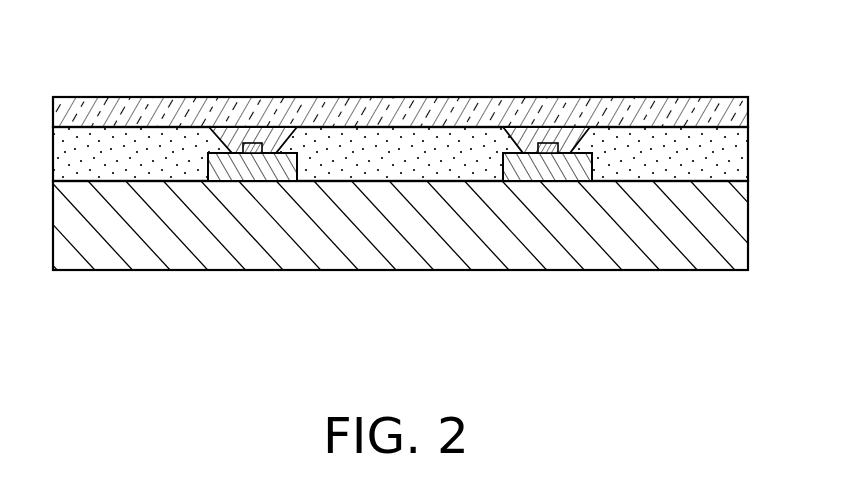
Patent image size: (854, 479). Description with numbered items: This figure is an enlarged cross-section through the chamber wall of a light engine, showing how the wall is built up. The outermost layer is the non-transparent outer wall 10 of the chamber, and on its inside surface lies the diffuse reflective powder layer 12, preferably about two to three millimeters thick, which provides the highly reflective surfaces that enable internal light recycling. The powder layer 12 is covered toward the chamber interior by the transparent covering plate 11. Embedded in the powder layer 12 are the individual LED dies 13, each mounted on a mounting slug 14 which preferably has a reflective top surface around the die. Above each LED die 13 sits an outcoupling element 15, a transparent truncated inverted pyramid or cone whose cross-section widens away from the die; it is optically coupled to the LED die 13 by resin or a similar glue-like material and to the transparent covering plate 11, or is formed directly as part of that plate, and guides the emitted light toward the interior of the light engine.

The non-transparent outer wall 10 is at (273, 270).
The transparent covering plate 11 is at (457, 117).
The diffuse reflective powder layer 12 is at (123, 140).
The LED die 13 is at (252, 143).
The mounting slug 14 is at (220, 153).
The outcoupling element 15 is at (528, 140).